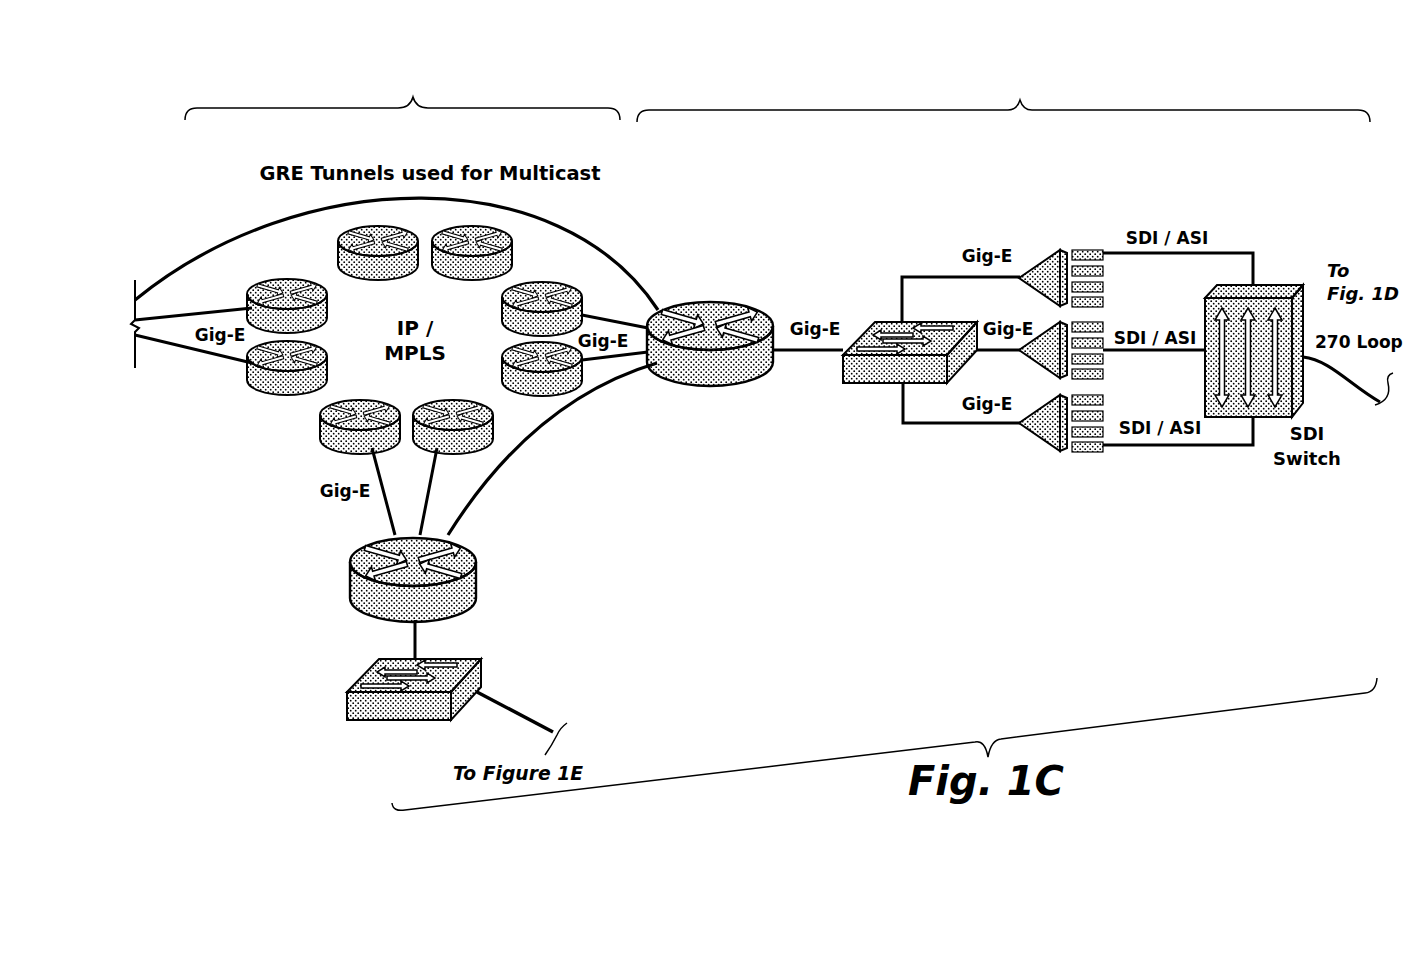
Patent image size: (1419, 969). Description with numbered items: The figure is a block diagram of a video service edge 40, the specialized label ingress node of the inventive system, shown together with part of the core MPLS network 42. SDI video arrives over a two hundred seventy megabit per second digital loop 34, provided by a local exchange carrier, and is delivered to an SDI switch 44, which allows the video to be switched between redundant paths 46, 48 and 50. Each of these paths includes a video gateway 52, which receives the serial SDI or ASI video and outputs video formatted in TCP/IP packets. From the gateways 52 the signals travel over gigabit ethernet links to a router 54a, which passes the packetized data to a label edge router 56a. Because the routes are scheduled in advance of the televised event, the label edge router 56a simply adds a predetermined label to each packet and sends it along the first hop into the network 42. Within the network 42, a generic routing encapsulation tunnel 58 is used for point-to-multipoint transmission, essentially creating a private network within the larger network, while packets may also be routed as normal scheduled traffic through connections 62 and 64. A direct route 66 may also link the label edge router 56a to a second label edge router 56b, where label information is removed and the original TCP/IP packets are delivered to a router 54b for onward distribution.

The 270 Mbps digital loop 34 is at (1357, 387).
The video service edge 40 is at (1234, 96).
The MPLS network 42 is at (566, 93).
The SDI switch 44 is at (1273, 285).
The redundant path 46 is at (1225, 253).
The redundant path 48 is at (1143, 352).
The redundant path 50 is at (1168, 447).
The video gateway 52 is at (1052, 253).
The router 54a is at (875, 322).
The router 54b is at (480, 657).
The label edge router 56a is at (730, 300).
The label edge router 56b is at (477, 567).
The GRE tunnel 58 is at (638, 270).
The connection 62 is at (617, 317).
The connection 64 is at (617, 363).
The direct route 66 is at (540, 433).